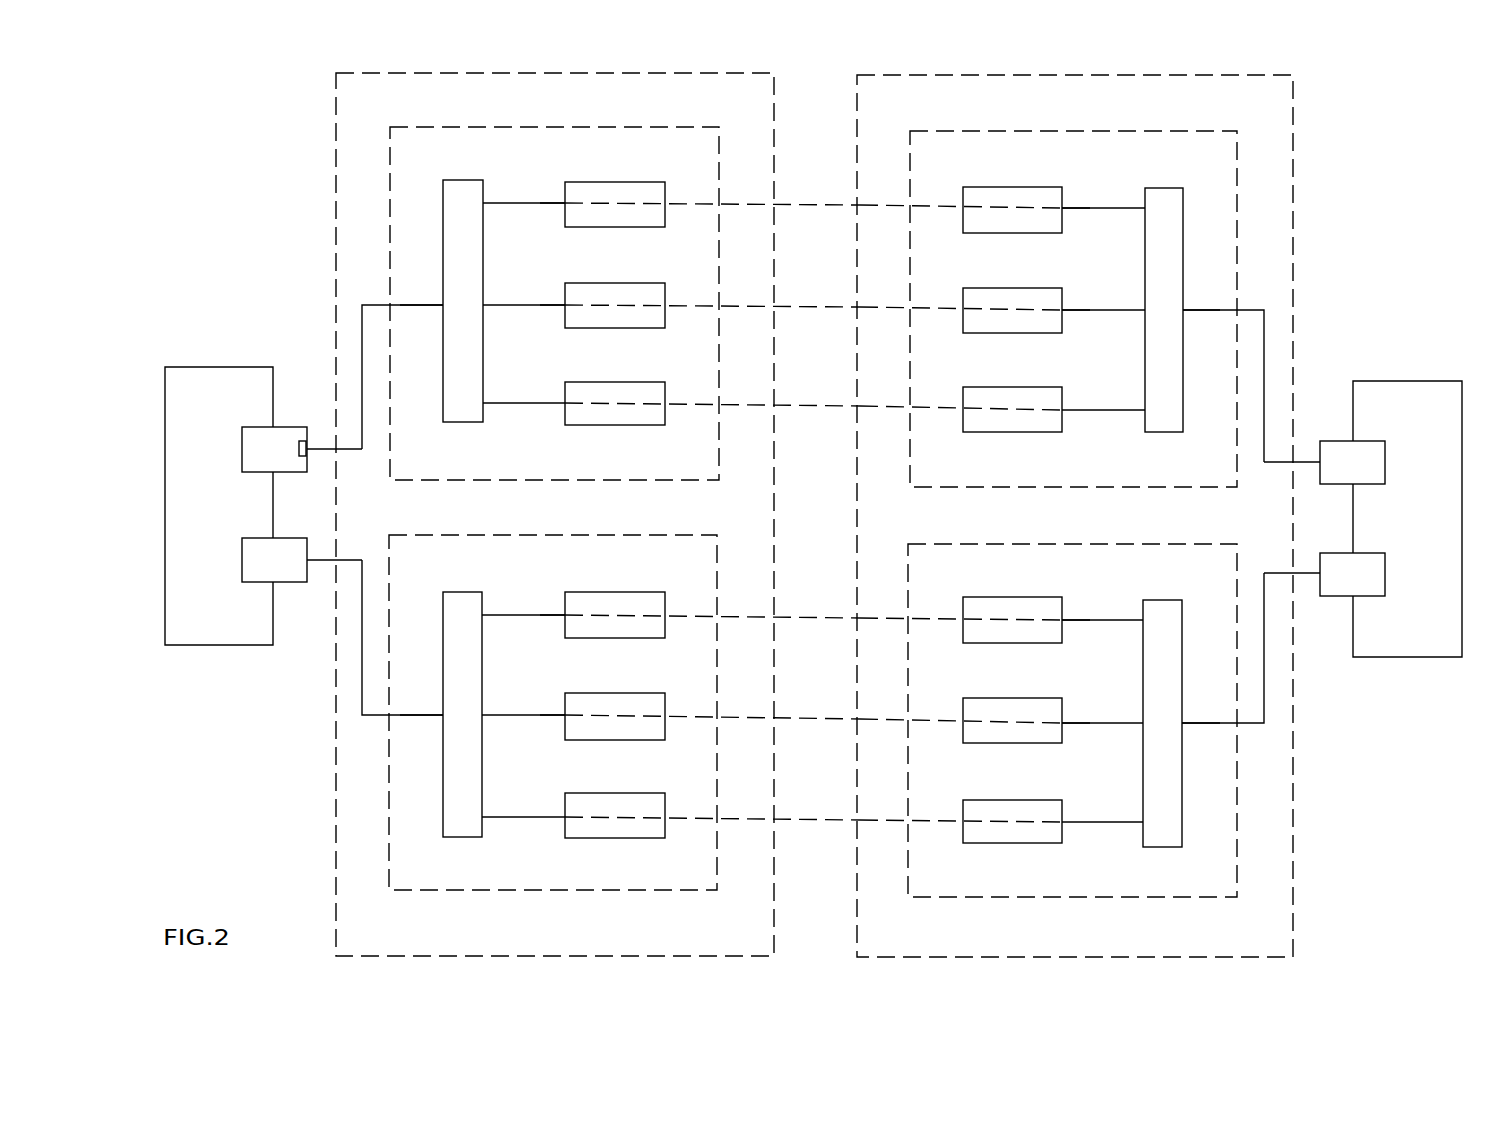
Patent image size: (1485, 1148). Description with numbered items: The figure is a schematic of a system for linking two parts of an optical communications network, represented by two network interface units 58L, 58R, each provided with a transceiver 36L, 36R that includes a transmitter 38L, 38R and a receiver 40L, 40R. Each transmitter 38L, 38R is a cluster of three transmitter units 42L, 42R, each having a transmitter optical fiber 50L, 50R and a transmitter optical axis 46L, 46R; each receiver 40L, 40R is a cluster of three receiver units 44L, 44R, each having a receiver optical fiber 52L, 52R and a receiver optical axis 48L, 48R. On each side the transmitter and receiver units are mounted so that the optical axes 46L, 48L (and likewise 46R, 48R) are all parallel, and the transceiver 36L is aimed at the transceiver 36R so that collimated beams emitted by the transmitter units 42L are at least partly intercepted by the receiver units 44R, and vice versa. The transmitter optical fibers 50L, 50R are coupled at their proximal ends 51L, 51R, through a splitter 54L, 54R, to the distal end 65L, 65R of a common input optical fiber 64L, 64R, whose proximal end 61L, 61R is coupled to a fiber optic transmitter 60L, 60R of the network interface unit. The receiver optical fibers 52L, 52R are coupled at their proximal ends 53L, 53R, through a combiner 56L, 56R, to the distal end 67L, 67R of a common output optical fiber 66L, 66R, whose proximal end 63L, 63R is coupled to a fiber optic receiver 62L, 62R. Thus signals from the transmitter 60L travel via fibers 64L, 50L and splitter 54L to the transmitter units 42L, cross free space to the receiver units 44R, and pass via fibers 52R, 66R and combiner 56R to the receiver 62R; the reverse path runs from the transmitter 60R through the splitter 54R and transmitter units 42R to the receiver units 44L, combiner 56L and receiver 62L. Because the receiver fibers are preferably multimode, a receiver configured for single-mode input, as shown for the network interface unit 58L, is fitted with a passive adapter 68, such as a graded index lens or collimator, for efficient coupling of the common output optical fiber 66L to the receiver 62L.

The transceiver 36L is at (568, 73).
The transceiver 36R is at (1063, 75).
The transmitter 38L is at (395, 481).
The transmitter 38R is at (1135, 543).
The receiver 40L is at (490, 535).
The receiver 40R is at (1232, 488).
The transmitter unit 42L is at (650, 228).
The transmitter unit 42R is at (975, 643).
The receiver unit 44L is at (650, 638).
The receiver unit 44R is at (975, 233).
The transmitter optical axis 46L is at (668, 207).
The transmitter optical axis 46R is at (963, 622).
The receiver optical axis 48L is at (668, 619).
The receiver optical axis 48R is at (963, 210).
The transmitter optical fiber 50L is at (530, 207).
The transmitter optical fiber 50R is at (1100, 622).
The proximal end of transmitter optical fiber 51L is at (486, 207).
The proximal end of transmitter optical fiber 51R is at (1143, 622).
The receiver optical fiber 52L is at (530, 619).
The receiver optical fiber 52R is at (1100, 210).
The proximal end of receiver optical fiber 53L is at (486, 619).
The proximal end of receiver optical fiber 53R is at (1143, 210).
The splitter 54L is at (462, 203).
The splitter 54R is at (1163, 822).
The combiner 56L is at (462, 815).
The combiner 56R is at (1163, 213).
The network interface unit 58L is at (236, 517).
The network interface unit 58R is at (1423, 529).
The fiber optic transmitter 60L is at (289, 462).
The fiber optic transmitter 60R is at (1369, 587).
The proximal end of common input optical fiber 61L is at (322, 440).
The proximal end of common input optical fiber 61R is at (1308, 598).
The fiber optic receiver 62L is at (289, 574).
The fiber optic receiver 62R is at (1369, 476).
The proximal end of common output optical fiber 63L is at (318, 568).
The proximal end of common output optical fiber 63R is at (1305, 457).
The common input optical fiber 64L is at (375, 305).
The common input optical fiber 64R is at (1250, 727).
The distal end of common input optical fiber 65L is at (440, 312).
The distal end of common input optical fiber 65R is at (1185, 727).
The common output optical fiber 66L is at (372, 720).
The common output optical fiber 66R is at (1248, 305).
The distal end of common output optical fiber 67L is at (440, 720).
The distal end of common output optical fiber 67R is at (1185, 315).
The passive adapter 68 is at (310, 460).